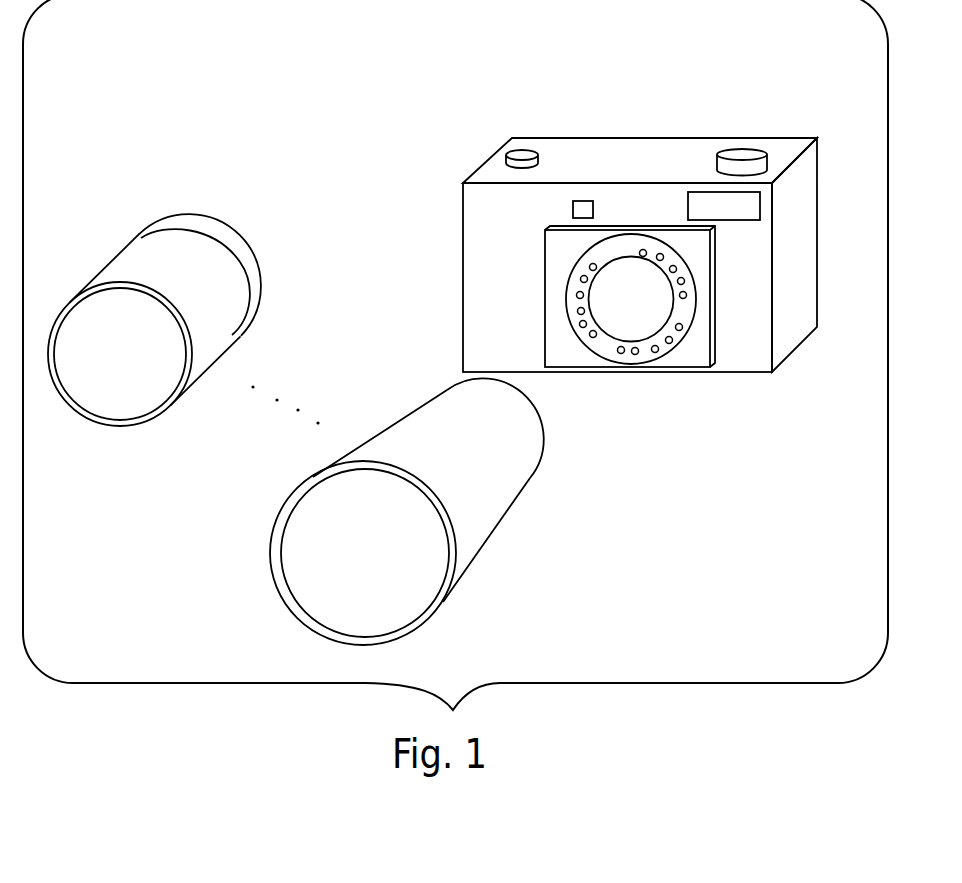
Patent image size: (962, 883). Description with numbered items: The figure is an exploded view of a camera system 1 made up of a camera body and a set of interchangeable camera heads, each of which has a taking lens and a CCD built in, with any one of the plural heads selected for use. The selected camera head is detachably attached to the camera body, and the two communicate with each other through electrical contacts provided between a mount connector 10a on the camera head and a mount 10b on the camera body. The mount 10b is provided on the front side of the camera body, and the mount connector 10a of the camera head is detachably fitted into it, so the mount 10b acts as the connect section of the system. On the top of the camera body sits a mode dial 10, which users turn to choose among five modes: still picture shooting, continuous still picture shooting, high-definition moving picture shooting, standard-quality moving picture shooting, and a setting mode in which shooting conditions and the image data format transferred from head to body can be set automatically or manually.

The camera system 1 is at (672, 220).
The mode dial 10 is at (718, 152).
The mount connector 10a is at (558, 429).
The mount 10b is at (672, 343).